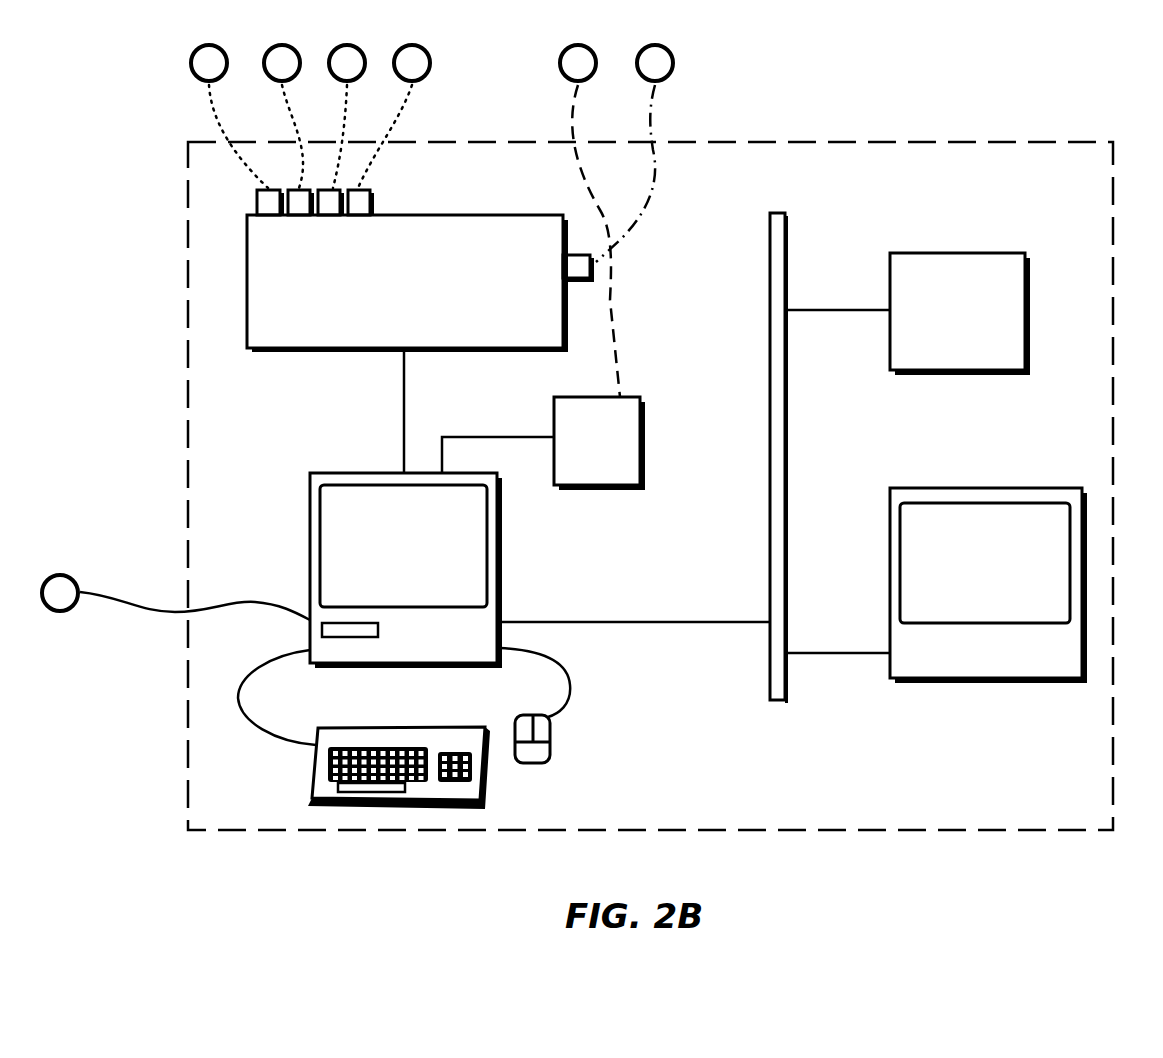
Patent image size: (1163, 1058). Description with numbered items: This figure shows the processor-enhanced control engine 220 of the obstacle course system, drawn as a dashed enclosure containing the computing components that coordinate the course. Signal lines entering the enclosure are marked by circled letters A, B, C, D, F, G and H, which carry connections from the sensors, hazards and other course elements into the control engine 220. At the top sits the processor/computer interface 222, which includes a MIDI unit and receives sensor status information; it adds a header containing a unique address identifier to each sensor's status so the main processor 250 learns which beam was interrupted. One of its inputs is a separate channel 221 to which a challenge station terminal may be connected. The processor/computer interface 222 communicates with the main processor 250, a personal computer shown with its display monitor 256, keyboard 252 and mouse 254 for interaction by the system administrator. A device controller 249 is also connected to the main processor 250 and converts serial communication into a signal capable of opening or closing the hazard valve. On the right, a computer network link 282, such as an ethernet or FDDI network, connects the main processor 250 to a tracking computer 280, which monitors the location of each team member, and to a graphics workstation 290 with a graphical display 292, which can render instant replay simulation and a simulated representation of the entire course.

The control engine 220 is at (188, 496).
The channel 221 is at (257, 200).
The processor/computer interface 222 is at (247, 349).
The device controller 249 is at (643, 418).
The main processor 250 is at (436, 570).
The keyboard 252 is at (311, 776).
The mouse 254 is at (552, 747).
The display monitor 256 is at (502, 543).
The tracking computer 280 is at (1030, 318).
The computer network link 282 is at (789, 497).
The graphics workstation 290 is at (1016, 565).
The graphical display 292 is at (1010, 503).
The signal line A is at (176, 597).
The signal line B is at (229, 116).
The signal line C is at (283, 116).
The signal line D is at (347, 116).
The signal line F is at (394, 116).
The signal line G is at (590, 221).
The signal line H is at (634, 153).